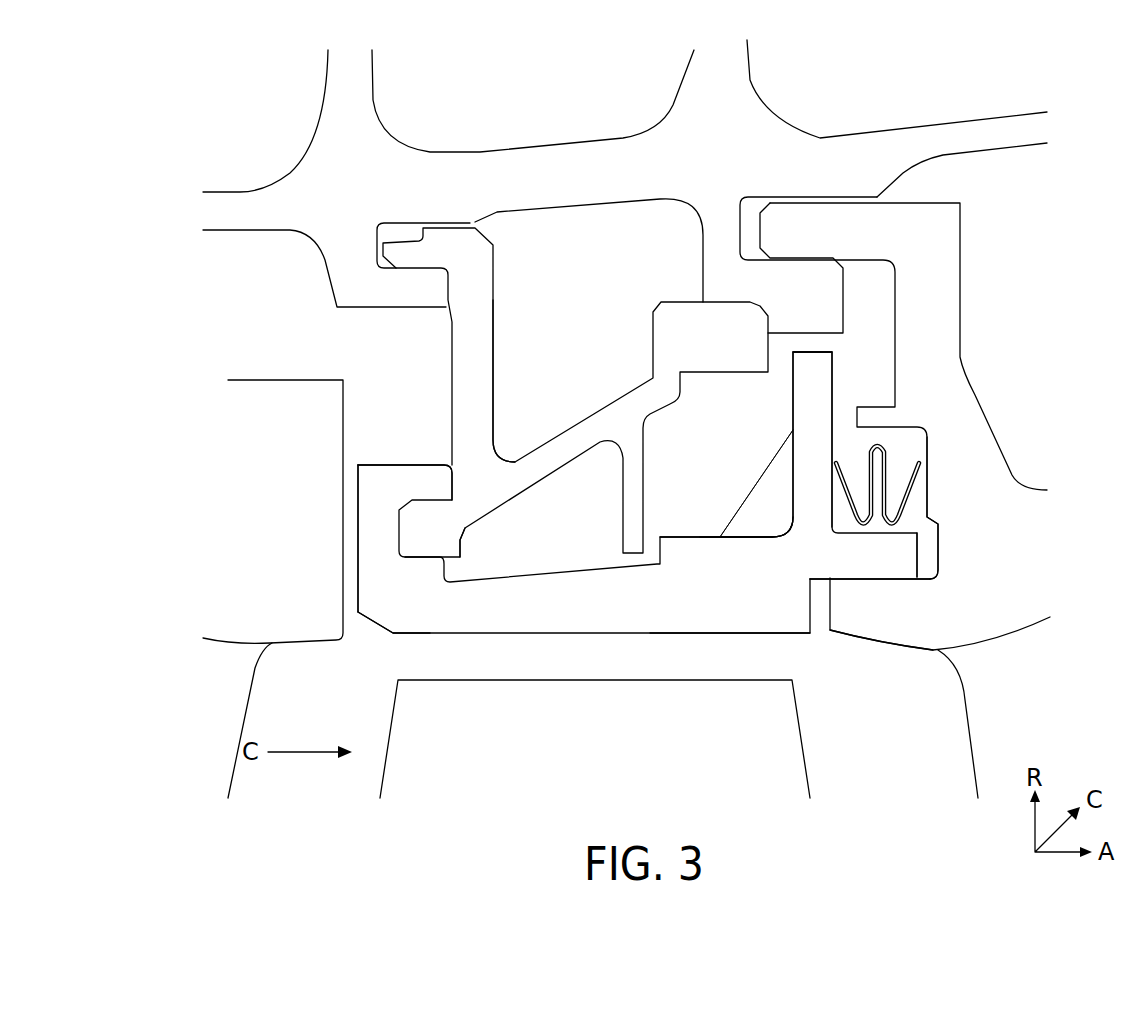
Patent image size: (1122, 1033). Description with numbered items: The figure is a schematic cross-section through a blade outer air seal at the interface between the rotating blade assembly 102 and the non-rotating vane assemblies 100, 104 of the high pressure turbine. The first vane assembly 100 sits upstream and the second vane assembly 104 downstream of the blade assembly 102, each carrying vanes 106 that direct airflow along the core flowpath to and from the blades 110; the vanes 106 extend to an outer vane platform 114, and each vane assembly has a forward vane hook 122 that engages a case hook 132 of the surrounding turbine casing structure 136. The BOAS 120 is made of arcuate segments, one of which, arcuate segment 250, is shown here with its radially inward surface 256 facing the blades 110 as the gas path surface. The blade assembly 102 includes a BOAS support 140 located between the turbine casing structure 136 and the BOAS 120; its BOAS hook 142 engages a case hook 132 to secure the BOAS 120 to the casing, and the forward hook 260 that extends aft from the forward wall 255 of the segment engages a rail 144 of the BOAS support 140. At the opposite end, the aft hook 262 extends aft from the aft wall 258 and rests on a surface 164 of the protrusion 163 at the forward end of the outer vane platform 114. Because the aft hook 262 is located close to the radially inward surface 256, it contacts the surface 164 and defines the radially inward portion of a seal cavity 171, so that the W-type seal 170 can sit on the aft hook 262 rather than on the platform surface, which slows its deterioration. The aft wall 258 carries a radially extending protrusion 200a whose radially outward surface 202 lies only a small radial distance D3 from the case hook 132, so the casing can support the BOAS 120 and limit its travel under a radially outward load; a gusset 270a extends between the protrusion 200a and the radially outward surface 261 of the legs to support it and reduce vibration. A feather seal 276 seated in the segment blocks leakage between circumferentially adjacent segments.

The vane assembly 100 is at (212, 392).
The blade assembly 102 is at (604, 244).
The vane assembly 104 is at (1028, 327).
The vane 106 is at (196, 725).
The blade 110 is at (594, 751).
The outer vane platform 114 is at (237, 580).
The BOAS 120 is at (478, 648).
The forward vane hook 122 is at (890, 245).
The case hook 132 is at (812, 300).
The turbine casing structure 136 is at (327, 103).
The BOAS support 140 is at (520, 465).
The BOAS hook 142 is at (420, 245).
The rail 144 is at (460, 537).
The protrusion 163 is at (850, 618).
The surface 164 is at (927, 562).
The seal 170 is at (890, 460).
The seal cavity 171 is at (869, 443).
The protrusion 200a is at (795, 376).
The radially outward surface 202 is at (808, 352).
The arcuate segment 250 is at (640, 619).
The forward wall 255 is at (363, 560).
The radially inward surface 256 is at (744, 637).
The aft wall 258 is at (807, 442).
The forward hook 260 is at (420, 478).
The radially outward surface 261 is at (680, 538).
The aft hook 262 is at (872, 565).
The gusset 270a is at (763, 520).
The feather seal 276 is at (400, 597).
The radial distance D3 is at (841, 346).